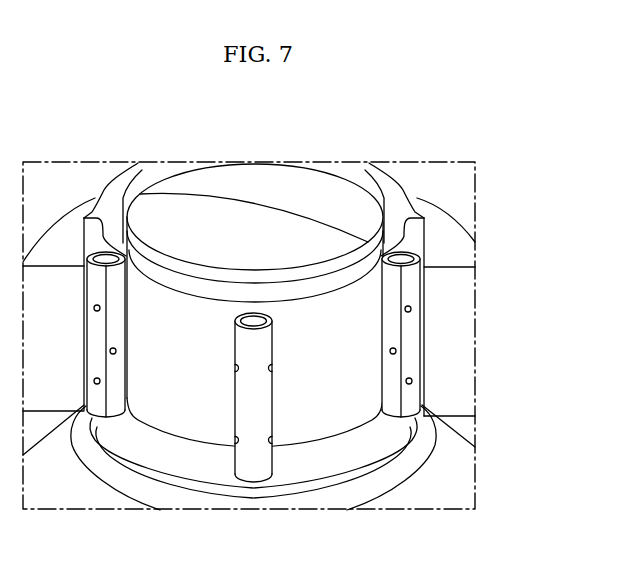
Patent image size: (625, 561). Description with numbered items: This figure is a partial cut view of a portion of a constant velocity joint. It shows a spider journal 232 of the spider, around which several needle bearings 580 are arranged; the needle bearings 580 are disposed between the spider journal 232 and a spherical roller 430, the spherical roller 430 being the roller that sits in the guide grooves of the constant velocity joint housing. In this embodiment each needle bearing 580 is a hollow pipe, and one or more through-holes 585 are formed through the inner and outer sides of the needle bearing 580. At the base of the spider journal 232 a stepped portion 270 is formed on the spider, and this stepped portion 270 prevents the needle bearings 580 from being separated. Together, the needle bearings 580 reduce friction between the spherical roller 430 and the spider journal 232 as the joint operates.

The spider journal 232 is at (279, 181).
The spherical roller 430 is at (458, 346).
The needle bearing 580 is at (458, 334).
The through-hole 585 is at (412, 308).
The stepped portion 270 is at (396, 437).